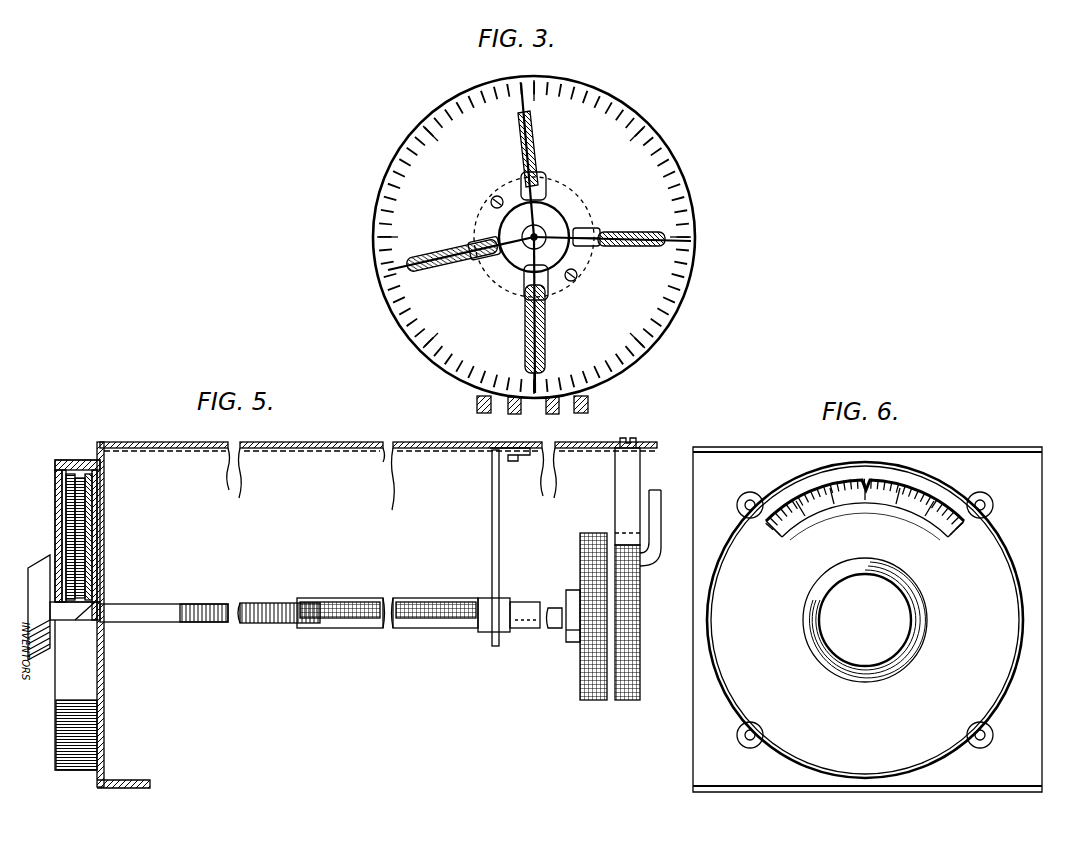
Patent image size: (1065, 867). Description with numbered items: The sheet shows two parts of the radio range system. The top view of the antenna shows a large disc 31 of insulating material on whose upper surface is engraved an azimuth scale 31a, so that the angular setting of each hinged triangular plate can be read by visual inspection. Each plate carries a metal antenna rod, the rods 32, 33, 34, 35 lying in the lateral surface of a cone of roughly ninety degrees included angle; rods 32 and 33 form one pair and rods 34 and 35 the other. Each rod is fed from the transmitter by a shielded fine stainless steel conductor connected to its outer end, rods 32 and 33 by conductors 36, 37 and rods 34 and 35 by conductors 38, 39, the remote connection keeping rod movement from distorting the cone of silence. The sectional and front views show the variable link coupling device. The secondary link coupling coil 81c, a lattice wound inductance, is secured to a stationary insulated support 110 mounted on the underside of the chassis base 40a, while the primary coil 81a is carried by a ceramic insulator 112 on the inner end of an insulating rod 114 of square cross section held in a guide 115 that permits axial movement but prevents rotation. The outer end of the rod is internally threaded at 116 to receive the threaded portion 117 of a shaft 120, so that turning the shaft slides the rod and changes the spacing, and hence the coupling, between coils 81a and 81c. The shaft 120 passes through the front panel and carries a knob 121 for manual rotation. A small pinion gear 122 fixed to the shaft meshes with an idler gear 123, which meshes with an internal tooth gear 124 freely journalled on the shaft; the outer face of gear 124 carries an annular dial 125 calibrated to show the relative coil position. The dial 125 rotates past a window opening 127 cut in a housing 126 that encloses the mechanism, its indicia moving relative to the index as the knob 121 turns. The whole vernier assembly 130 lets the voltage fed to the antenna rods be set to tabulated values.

In FIG. 3, the disc 31 is at (401, 325).
In FIG. 3, the azimuth scale 31a is at (678, 296).
In FIG. 3, the antenna rod 32 is at (455, 265).
In FIG. 3, the antenna rod 33 is at (613, 238).
In FIG. 3, the antenna rod 34 is at (540, 310).
In FIG. 3, the antenna rod 35 is at (545, 220).
In FIG. 3, the conductor 36 is at (452, 256).
In FIG. 3, the conductor 37 is at (636, 248).
In FIG. 3, the conductor 38 is at (539, 362).
In FIG. 3, the conductor 39 is at (531, 180).
In FIG. 5, the chassis base 40a is at (335, 441).
In FIG. 5, the primary coil 81a is at (588, 700).
In FIG. 5, the secondary link coupling coil 81c is at (633, 700).
In FIG. 5, the stationary insulated support 110 is at (620, 481).
In FIG. 5, the ceramic insulator 112 is at (572, 643).
In FIG. 5, the insulating rod 114 is at (533, 593).
In FIG. 5, the guide 115 is at (484, 606).
In FIG. 5, the internally threaded portion 116 is at (362, 606).
In FIG. 5, the threaded portion 117 is at (265, 624).
In FIG. 5, the shaft 120 is at (148, 610).
In FIG. 5, the knob 121 is at (48, 562).
In FIG. 6, the knob 121 is at (912, 650).
In FIG. 5, the pinion gear 122 is at (99, 600).
In FIG. 5, the idler gear 123 is at (99, 516).
In FIG. 5, the internal tooth gear 124 is at (80, 458).
In FIG. 5, the annular dial 125 is at (66, 490).
In FIG. 6, the annular dial 125 is at (915, 496).
In FIG. 6, the housing 126 is at (1000, 550).
In FIG. 5, the window opening 127 is at (56, 480).
In FIG. 6, the window opening 127 is at (902, 516).
In FIG. 5, the vernier assembly 130 is at (88, 712).
In FIG. 6, the vernier assembly 130 is at (997, 688).